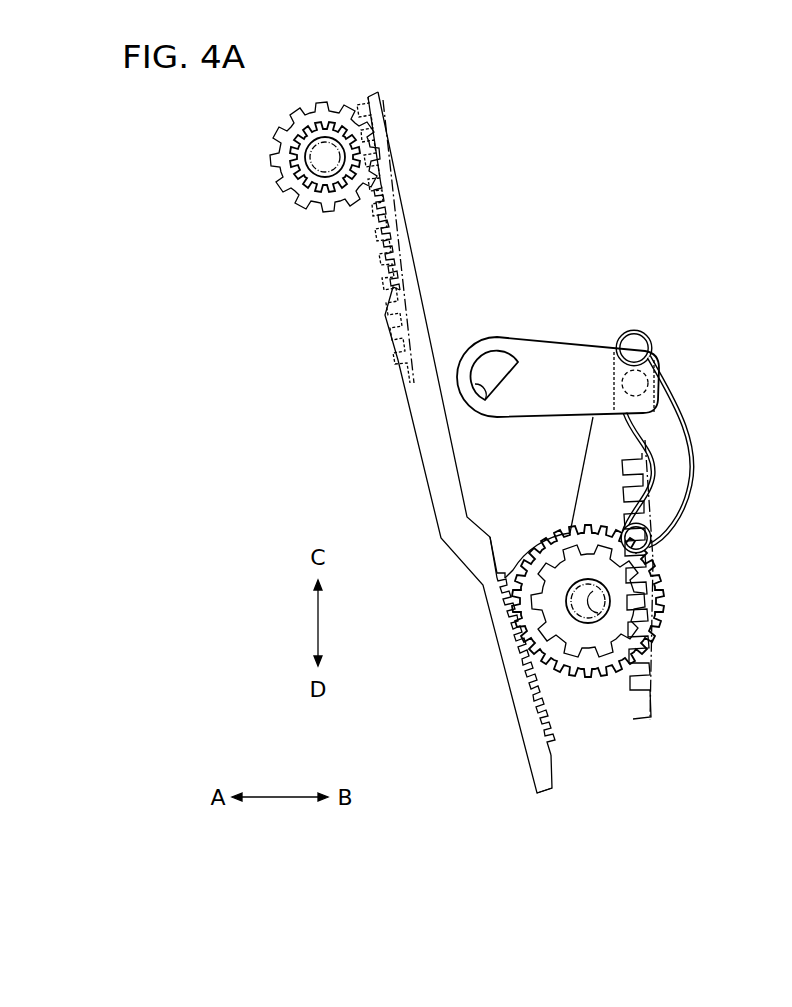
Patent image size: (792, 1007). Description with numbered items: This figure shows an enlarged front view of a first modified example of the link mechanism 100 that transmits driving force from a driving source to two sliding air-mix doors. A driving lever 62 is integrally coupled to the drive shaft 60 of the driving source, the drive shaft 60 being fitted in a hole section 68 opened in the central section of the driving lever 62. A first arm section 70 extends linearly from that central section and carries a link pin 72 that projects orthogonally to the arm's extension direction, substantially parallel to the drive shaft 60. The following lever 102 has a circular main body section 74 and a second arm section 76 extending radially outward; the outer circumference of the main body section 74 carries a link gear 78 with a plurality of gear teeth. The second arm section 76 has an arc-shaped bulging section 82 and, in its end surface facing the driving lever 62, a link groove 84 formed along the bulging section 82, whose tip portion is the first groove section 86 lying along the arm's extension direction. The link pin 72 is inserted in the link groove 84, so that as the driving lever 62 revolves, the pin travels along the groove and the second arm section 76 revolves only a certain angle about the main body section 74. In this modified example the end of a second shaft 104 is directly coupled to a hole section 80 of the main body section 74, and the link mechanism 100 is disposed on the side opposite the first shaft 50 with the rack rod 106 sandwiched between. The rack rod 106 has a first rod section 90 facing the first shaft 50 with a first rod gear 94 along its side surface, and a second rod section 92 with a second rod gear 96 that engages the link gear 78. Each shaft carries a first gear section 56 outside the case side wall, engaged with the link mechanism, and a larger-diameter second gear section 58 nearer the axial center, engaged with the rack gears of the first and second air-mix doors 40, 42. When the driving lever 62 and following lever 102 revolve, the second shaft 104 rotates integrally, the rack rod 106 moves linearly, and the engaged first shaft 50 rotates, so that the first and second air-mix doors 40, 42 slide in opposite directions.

The first air-mix door 40 is at (388, 96).
The second air-mix door 42 is at (630, 726).
The first shaft 50 is at (303, 206).
The first gear section 56 is at (295, 173).
The second gear section 58 is at (304, 158).
The drive shaft 60 is at (494, 354).
The driving lever 62 is at (586, 359).
The hole section 68 is at (490, 394).
The first arm section 70 is at (547, 395).
The link pin 72 is at (662, 374).
The main body section 74 is at (555, 546).
The second arm section 76 is at (592, 480).
The link gear 78 is at (497, 575).
The hole section 80 is at (595, 601).
The bulging section 82 is at (690, 427).
The link groove 84 is at (660, 517).
The first groove section 86 is at (641, 343).
The first rod section 90 is at (400, 206).
The second rod section 92 is at (518, 740).
The first rod gear 94 is at (378, 212).
The second rod gear 96 is at (540, 713).
The link mechanism 100 is at (457, 400).
The following lever 102 is at (666, 606).
The second shaft 104 is at (521, 660).
The rack rod 106 is at (405, 467).